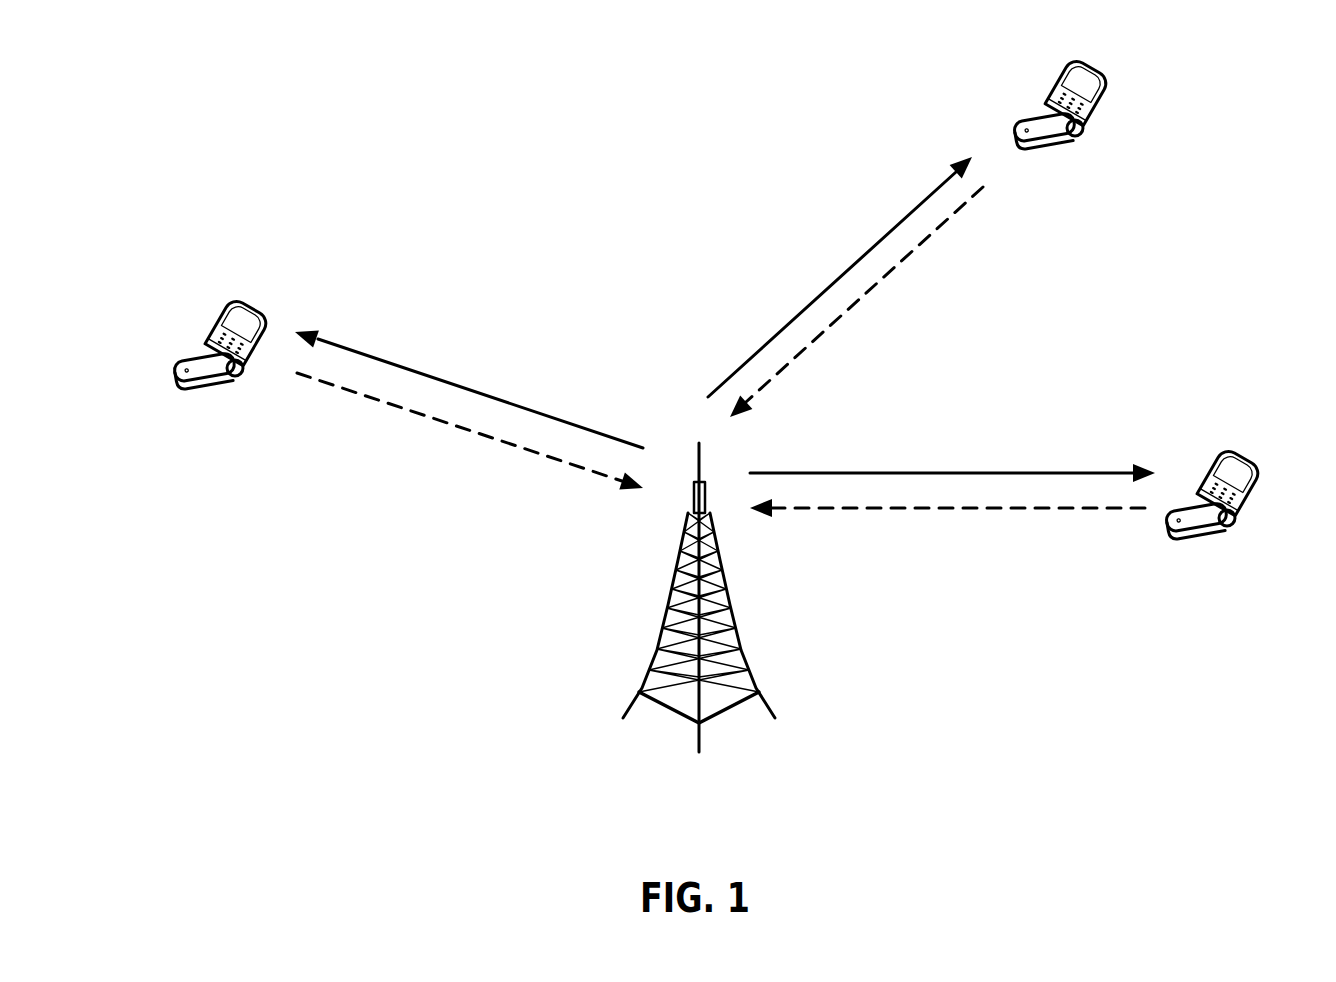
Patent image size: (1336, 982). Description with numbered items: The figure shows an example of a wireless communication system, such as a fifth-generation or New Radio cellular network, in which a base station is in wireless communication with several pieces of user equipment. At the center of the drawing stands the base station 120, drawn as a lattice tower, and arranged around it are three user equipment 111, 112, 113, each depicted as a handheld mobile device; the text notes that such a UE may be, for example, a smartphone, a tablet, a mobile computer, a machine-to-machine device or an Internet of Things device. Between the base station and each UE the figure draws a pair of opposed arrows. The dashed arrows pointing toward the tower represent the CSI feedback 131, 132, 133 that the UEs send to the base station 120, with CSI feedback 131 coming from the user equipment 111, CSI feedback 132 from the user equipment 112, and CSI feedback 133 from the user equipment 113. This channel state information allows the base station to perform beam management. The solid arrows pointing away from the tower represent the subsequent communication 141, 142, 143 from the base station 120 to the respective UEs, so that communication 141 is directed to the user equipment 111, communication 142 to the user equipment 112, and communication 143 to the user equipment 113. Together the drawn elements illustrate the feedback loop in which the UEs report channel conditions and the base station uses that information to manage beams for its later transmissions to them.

The user equipment 111 is at (233, 388).
The user equipment 112 is at (1223, 537).
The user equipment 113 is at (1073, 145).
The base station 120 is at (760, 675).
The CSI feedback 131 is at (510, 443).
The CSI feedback 132 is at (913, 508).
The CSI feedback 133 is at (882, 275).
The subsequent communication 141 is at (405, 365).
The subsequent communication 142 is at (1062, 472).
The subsequent communication 143 is at (888, 228).